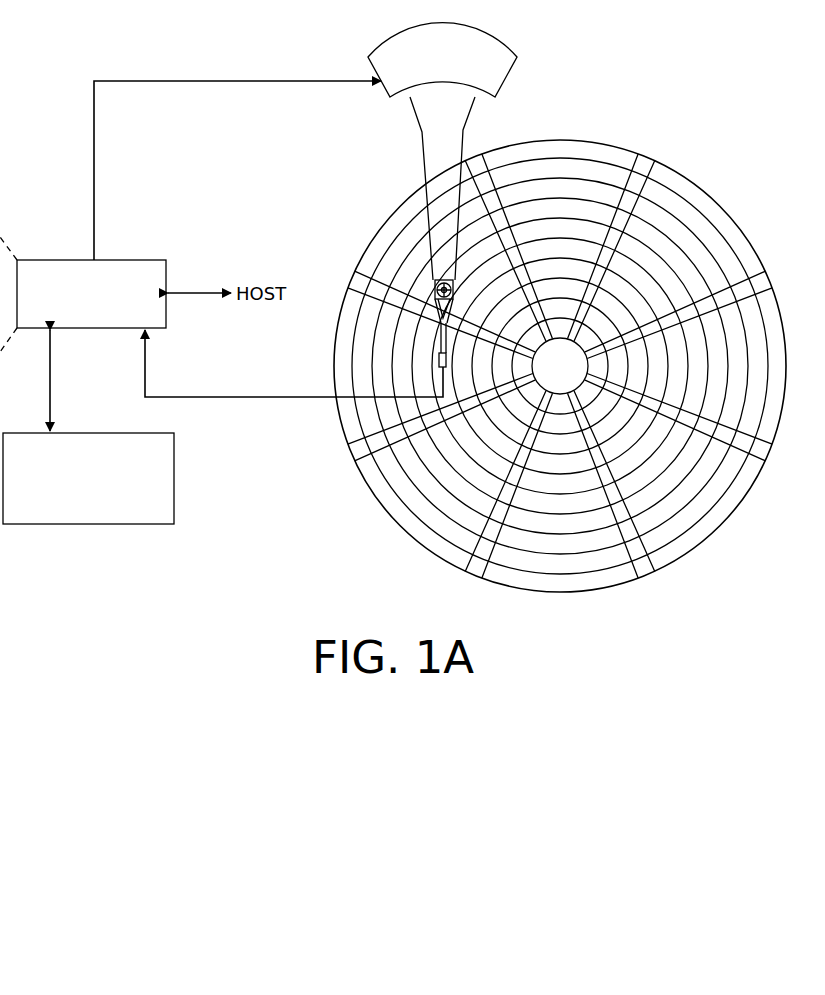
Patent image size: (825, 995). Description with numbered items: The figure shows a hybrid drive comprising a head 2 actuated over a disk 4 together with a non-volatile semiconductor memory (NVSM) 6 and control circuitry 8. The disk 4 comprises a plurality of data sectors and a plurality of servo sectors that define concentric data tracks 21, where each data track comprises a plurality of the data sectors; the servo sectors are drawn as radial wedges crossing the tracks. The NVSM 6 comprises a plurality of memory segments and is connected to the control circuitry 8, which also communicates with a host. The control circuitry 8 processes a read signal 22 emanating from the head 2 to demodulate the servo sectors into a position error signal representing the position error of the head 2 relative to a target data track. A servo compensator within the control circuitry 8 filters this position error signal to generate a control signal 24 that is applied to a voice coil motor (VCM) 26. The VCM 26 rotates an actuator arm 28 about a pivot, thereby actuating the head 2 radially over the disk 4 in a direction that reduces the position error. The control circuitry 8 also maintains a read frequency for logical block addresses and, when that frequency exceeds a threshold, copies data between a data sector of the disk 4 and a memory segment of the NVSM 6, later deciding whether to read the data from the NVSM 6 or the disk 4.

The head 2 is at (436, 368).
The disk 4 is at (715, 191).
The non-volatile semiconductor memory (NVSM) 6 is at (175, 477).
The control circuitry 8 is at (100, 330).
The data tracks 21 is at (562, 170).
The read signal 22 is at (231, 397).
The control signal 24 is at (95, 193).
The voice coil motor (VCM) 26 is at (389, 96).
The actuator arm 28 is at (422, 168).